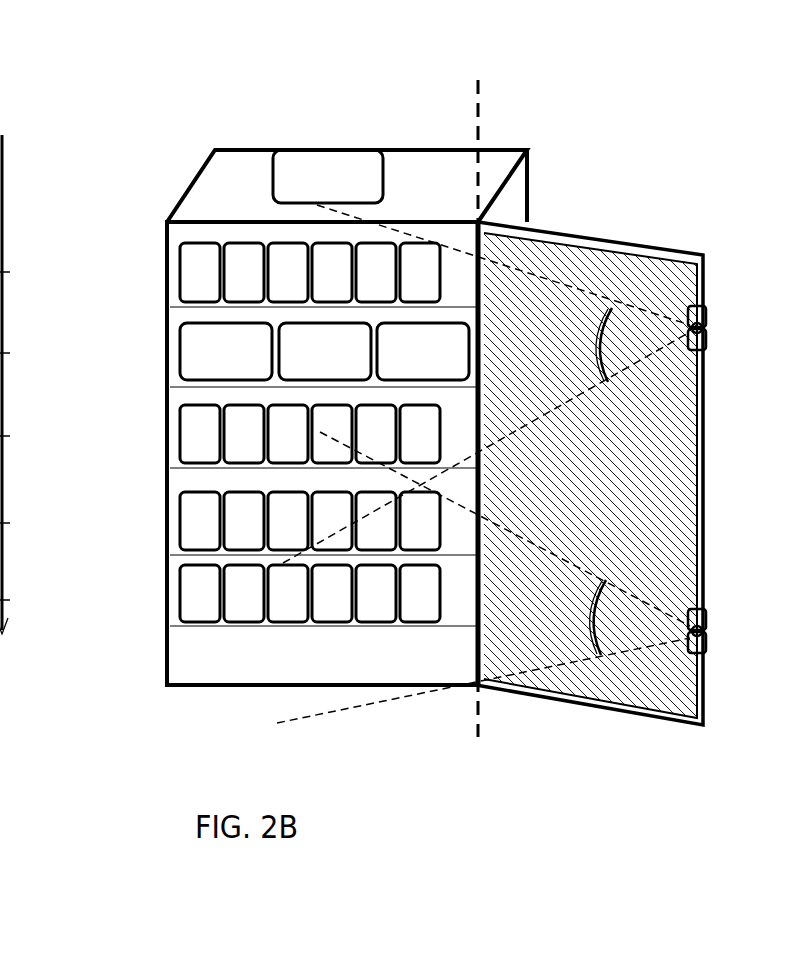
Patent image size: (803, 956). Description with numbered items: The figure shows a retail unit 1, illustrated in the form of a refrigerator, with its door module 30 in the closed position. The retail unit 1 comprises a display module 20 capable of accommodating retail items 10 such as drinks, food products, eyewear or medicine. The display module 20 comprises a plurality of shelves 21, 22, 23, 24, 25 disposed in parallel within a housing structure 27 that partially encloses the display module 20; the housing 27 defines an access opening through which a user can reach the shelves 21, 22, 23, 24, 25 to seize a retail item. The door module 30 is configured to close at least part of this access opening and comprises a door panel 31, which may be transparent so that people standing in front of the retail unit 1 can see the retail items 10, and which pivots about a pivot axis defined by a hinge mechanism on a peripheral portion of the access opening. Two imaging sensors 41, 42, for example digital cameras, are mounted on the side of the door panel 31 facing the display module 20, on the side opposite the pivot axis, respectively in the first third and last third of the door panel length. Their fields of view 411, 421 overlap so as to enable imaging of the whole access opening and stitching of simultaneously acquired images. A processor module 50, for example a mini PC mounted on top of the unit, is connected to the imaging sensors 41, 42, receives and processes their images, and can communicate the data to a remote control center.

The retail unit 1 is at (685, 139).
The retail items 10 is at (219, 226).
The display module 20 is at (305, 644).
The shelf 21 is at (177, 307).
The shelf 22 is at (177, 385).
The shelf 23 is at (177, 467).
The shelf 24 is at (177, 555).
The shelf 25 is at (177, 625).
The housing structure 27 is at (413, 150).
The door module 30 is at (660, 238).
The door panel 31 is at (705, 473).
The imaging sensor 41 is at (707, 340).
The field of view 411 is at (597, 352).
The imaging sensor 42 is at (707, 632).
The field of view 421 is at (592, 618).
The processor module 50 is at (297, 150).